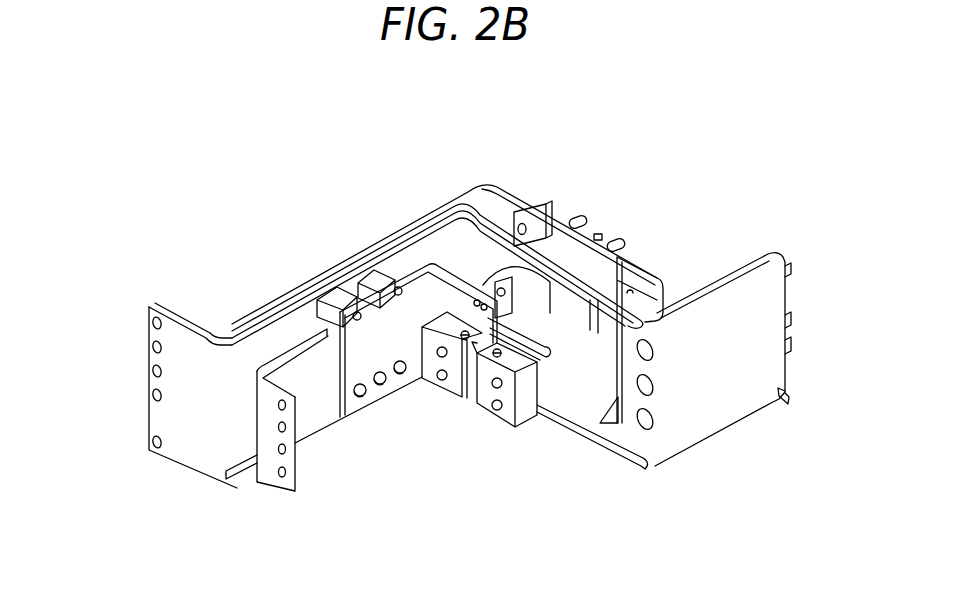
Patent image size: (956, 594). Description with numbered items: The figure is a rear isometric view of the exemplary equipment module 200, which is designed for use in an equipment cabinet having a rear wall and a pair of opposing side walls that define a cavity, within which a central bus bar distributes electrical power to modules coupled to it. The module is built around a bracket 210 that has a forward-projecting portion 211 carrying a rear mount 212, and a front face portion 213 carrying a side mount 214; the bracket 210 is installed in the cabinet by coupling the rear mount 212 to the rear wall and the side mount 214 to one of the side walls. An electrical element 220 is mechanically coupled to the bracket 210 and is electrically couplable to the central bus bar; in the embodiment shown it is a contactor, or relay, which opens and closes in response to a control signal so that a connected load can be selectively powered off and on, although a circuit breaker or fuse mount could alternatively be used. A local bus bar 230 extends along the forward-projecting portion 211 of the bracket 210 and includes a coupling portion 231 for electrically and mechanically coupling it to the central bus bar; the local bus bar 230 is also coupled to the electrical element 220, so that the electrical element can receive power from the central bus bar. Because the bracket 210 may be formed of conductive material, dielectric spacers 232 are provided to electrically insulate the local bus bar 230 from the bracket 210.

The equipment module 200 is at (468, 486).
The bracket 210 is at (471, 187).
The forward-projecting portion 211 is at (227, 447).
The rear mount 212 is at (190, 453).
The front face portion 213 is at (484, 248).
The side mount 214 is at (730, 405).
The electrical element 220 is at (625, 239).
The local bus bar 230 is at (320, 413).
The coupling portion 231 is at (267, 465).
The dielectric spacers 232 is at (342, 300).